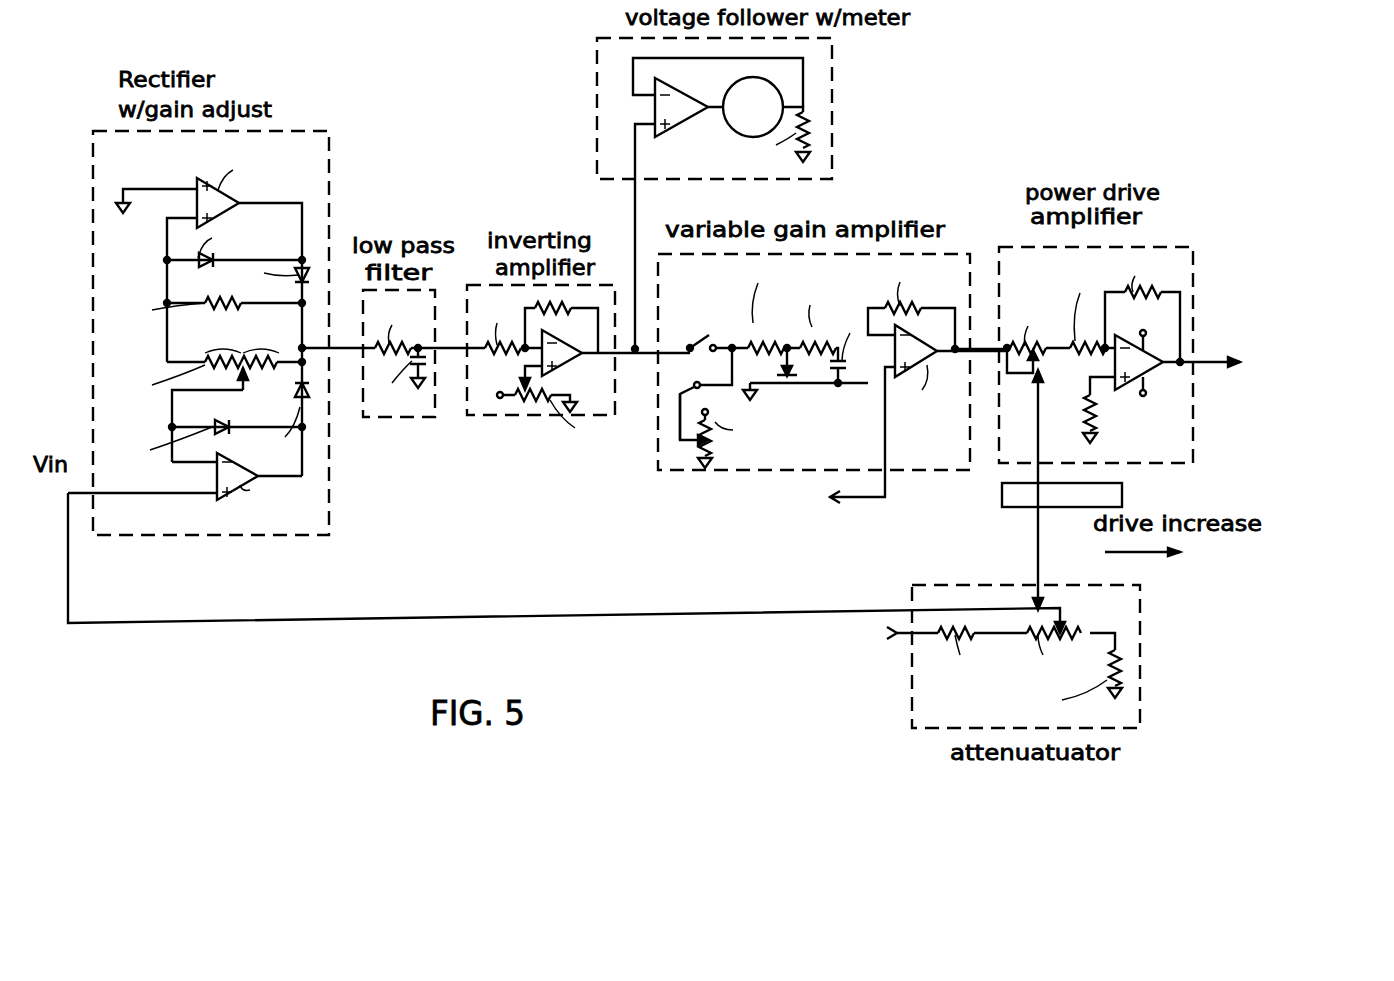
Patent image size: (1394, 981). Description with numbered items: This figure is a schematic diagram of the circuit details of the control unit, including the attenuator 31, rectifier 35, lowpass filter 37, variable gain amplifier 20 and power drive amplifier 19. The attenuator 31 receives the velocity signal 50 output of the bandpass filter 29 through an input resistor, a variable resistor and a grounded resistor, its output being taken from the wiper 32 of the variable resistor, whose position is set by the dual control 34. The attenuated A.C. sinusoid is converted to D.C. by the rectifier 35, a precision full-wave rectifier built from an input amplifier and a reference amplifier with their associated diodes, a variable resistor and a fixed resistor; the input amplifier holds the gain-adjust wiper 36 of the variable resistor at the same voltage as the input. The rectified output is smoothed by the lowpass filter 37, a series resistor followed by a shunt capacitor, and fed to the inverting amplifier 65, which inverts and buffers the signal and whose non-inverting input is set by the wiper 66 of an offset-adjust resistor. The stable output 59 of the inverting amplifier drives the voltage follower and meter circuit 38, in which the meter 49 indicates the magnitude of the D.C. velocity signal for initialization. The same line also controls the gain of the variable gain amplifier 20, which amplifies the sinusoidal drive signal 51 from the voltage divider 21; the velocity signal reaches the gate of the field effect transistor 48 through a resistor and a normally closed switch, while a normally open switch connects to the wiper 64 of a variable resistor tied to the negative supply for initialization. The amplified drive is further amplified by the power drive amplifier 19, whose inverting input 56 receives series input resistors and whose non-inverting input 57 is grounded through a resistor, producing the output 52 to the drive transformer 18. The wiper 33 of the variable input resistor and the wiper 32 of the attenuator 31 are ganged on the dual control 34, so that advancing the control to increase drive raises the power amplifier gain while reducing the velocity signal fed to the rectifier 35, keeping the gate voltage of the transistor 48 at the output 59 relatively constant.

The rectifier 35 is at (92, 190).
The wiper 36 is at (190, 392).
The lowpass filter 37 is at (400, 417).
The inverting amplifier 65 is at (467, 415).
The wiper 66 is at (524, 366).
The output 59 is at (635, 351).
The voltage follower and meter circuit 38 is at (832, 140).
The meter 49 is at (724, 90).
The variable gain amplifier 20 is at (712, 475).
The field effect transistor 48 is at (787, 390).
The wiper 64 is at (680, 440).
The drive signal 51 is at (878, 497).
The voltage divider 21 is at (805, 516).
The power drive amplifier 19 is at (1175, 463).
The wiper 33 is at (1020, 375).
The inverting input 56 is at (1103, 354).
The non-inverting input 57 is at (1092, 385).
The output 52 is at (1193, 355).
The drive transformer 18 is at (1310, 386).
The dual control 34 is at (1002, 495).
The attenuator 31 is at (1140, 640).
The wiper 32 is at (1063, 622).
The velocity signal 50 is at (895, 637).
The bandpass filter 29 is at (794, 662).